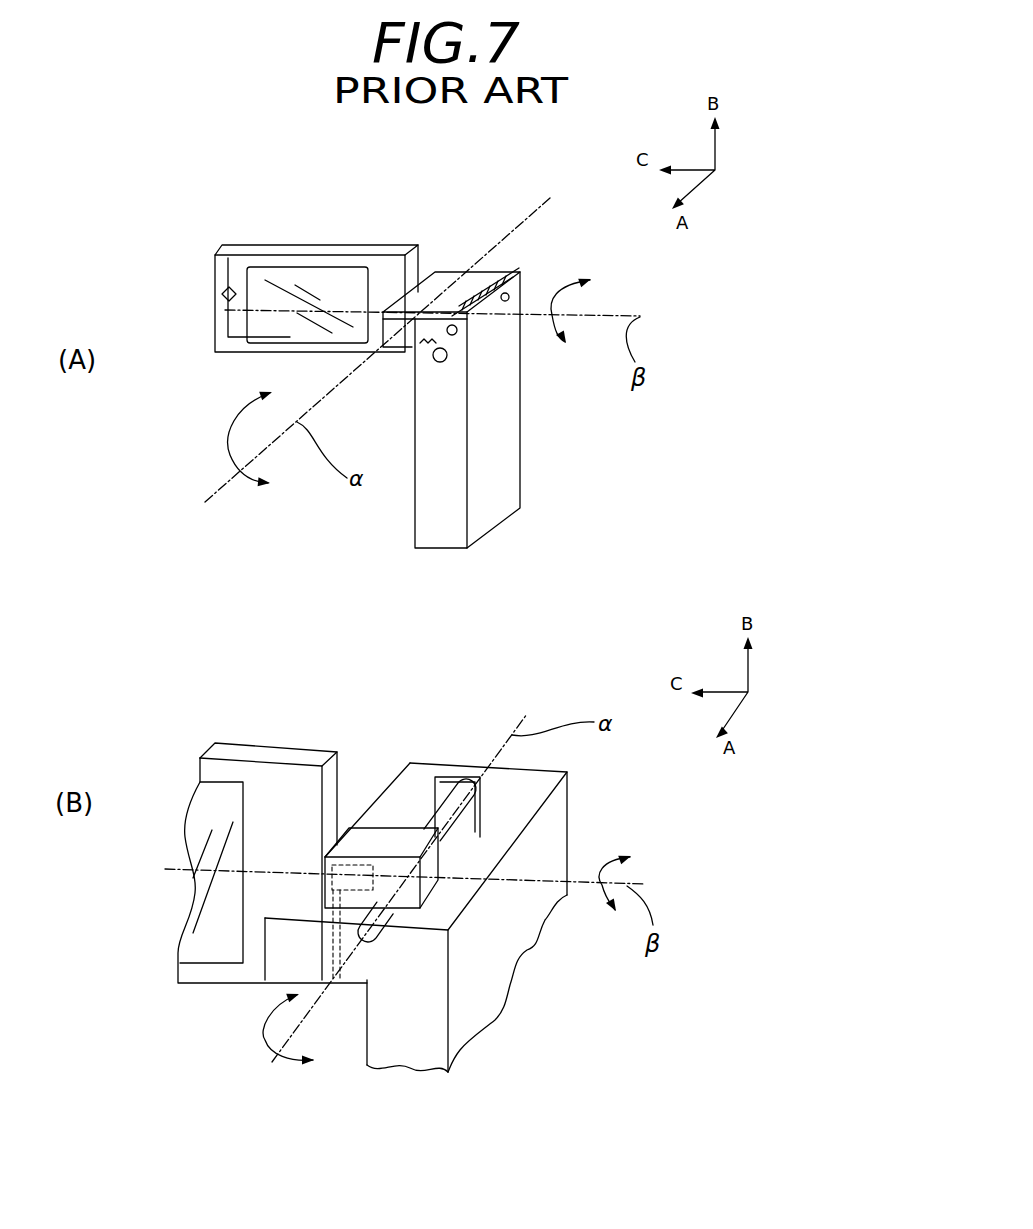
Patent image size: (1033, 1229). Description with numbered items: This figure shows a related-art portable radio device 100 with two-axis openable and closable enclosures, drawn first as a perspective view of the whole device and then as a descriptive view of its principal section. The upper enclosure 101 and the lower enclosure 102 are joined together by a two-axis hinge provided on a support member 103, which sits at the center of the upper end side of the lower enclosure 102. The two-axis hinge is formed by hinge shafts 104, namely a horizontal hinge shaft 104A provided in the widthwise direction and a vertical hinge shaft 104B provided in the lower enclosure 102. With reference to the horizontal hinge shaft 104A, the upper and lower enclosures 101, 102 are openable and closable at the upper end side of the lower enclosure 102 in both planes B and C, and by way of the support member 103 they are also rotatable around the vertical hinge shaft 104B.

The portable radio device 100 is at (632, 422).
The upper enclosure 101 is at (337, 250).
The lower enclosure 102 is at (500, 461).
The support member 103 is at (438, 290).
The hinge shaft 104 is at (351, 907).
The horizontal hinge shaft 104A is at (448, 930).
The vertical hinge shaft 104B is at (332, 882).